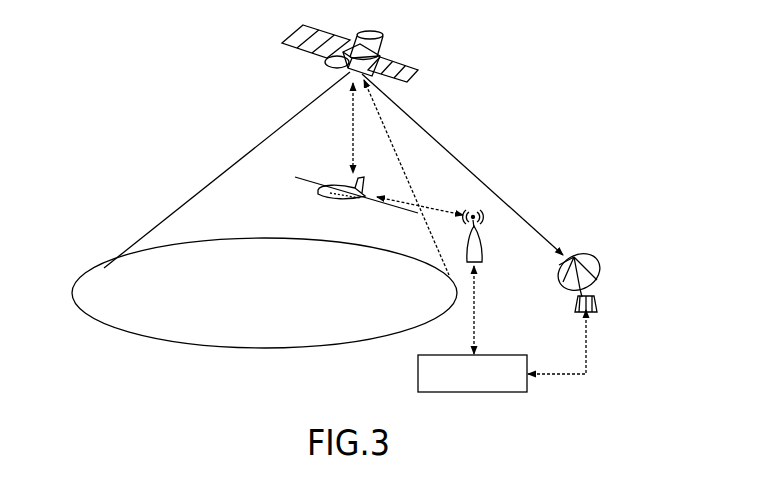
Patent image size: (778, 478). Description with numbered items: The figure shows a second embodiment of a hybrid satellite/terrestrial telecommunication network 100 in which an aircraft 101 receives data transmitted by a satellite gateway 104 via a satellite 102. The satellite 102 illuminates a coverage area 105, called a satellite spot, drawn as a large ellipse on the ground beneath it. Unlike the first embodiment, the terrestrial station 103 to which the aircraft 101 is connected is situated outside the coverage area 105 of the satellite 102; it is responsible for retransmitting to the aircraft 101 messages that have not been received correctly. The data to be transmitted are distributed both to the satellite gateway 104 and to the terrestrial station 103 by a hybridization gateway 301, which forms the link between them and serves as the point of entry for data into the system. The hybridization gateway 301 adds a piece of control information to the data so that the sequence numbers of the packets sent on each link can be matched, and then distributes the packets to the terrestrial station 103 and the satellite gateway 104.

The hybrid satellite/terrestrial telecommunication network 100 is at (575, 65).
The aircraft 101 is at (318, 192).
The satellite 102 is at (388, 50).
The terrestrial station 103 is at (480, 236).
The satellite gateway 104 is at (600, 272).
The coverage area 105 is at (78, 284).
The hybridization gateway 301 is at (513, 392).